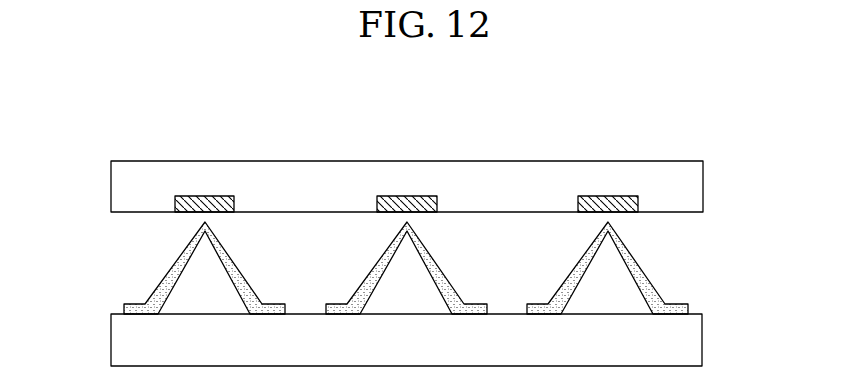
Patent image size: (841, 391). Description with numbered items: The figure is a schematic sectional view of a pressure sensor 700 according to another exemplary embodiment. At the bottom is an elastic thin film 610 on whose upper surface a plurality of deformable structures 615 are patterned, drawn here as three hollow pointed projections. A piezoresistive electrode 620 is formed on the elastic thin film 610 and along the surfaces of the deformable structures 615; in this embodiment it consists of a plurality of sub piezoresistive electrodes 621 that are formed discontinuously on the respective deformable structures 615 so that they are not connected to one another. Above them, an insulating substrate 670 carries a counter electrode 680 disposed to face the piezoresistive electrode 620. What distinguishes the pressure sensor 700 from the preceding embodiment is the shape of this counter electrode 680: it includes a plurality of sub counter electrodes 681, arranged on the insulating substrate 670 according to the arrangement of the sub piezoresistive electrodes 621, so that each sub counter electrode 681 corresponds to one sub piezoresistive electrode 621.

The pressure sensor 700 is at (710, 125).
The insulating substrate 670 is at (698, 189).
The counter electrode 680 is at (160, 201).
The sub counter electrode 681 is at (405, 196).
The elastic thin film 610 is at (697, 341).
The piezoresistive electrode 620 is at (115, 301).
The sub piezoresistive electrode 621 is at (572, 273).
The deformable structure 615 is at (613, 271).